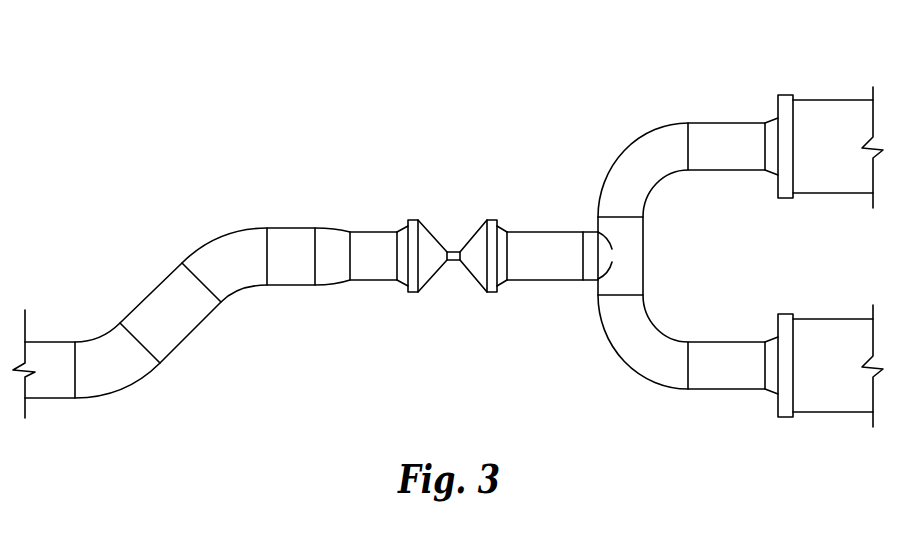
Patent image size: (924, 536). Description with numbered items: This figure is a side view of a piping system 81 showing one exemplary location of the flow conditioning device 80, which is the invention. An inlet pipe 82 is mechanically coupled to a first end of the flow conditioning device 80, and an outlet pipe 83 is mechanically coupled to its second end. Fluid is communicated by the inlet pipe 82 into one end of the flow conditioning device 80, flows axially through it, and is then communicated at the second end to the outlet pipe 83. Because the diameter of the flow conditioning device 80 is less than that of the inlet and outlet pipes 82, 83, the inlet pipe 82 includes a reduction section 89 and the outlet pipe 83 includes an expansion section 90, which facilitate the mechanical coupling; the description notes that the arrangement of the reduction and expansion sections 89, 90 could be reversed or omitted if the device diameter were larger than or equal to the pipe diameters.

The flow conditioning device 80 is at (453, 265).
The piping system 81 is at (679, 80).
The inlet pipe 82 is at (292, 228).
The outlet pipe 83 is at (527, 232).
The reduction section 89 is at (430, 287).
The expansion section 90 is at (472, 287).